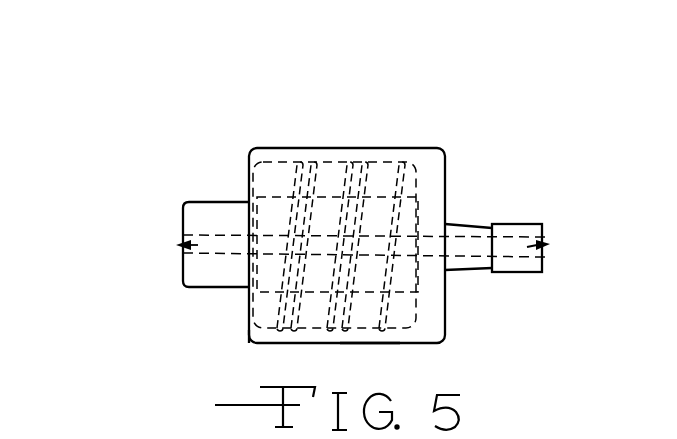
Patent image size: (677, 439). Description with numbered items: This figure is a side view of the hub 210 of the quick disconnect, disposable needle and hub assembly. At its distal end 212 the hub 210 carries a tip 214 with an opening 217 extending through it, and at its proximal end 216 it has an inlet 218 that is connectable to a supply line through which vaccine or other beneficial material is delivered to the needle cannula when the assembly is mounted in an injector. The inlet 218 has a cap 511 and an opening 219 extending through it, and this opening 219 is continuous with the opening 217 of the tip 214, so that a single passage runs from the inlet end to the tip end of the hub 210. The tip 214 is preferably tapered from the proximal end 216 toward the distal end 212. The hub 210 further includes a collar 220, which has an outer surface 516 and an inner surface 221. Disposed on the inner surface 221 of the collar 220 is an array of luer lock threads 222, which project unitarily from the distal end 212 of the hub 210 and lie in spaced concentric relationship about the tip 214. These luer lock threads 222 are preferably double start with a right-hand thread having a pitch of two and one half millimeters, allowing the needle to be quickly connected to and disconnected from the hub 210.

The hub 210 is at (466, 141).
The distal end 212 is at (420, 178).
The tip 214 is at (187, 287).
The proximal end 216 is at (447, 193).
The opening 217 is at (176, 247).
The inlet 218 is at (527, 224).
The opening 219 is at (553, 243).
The collar 220 is at (408, 147).
The inner surface 221 is at (363, 333).
The luer lock threads 222 is at (343, 355).
The cap 511 is at (517, 273).
The outer surface 516 is at (248, 345).